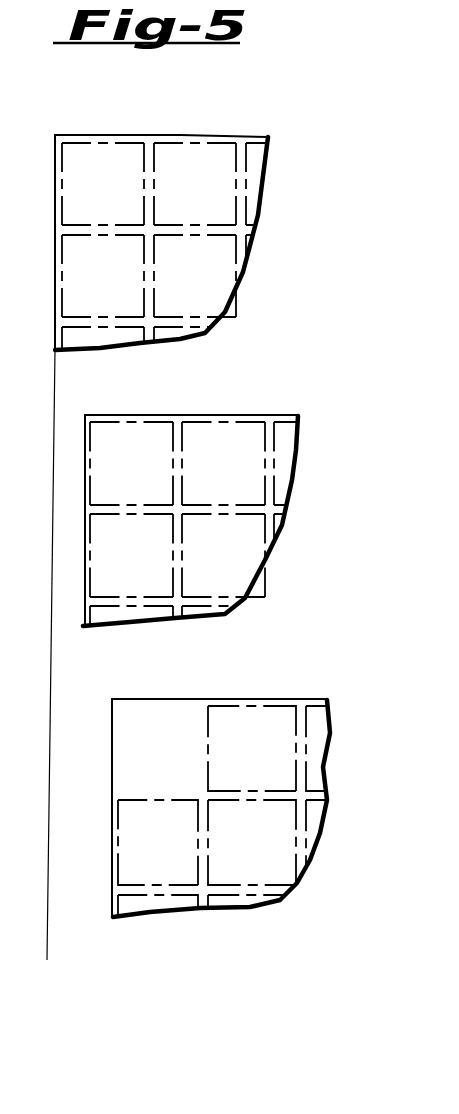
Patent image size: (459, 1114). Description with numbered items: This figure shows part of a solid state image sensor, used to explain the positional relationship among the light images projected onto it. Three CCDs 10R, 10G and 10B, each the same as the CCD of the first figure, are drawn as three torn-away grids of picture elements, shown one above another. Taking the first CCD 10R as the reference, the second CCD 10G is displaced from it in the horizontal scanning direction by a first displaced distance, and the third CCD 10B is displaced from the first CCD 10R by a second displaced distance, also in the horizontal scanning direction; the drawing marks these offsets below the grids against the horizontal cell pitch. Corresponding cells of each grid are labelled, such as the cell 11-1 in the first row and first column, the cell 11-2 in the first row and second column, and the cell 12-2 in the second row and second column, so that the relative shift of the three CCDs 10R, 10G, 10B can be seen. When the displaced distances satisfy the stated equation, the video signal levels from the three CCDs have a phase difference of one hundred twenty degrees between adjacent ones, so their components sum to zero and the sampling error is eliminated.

The first CCD 10R is at (342, 242).
The second CCD 10G is at (350, 527).
The third CCD 10B is at (392, 827).
The filter cell (row 1, column 1) 11-1 is at (92, 143).
The filter cell (row 1, column 2) 11-2 is at (188, 139).
The filter cell (row 2, column 2) 12-2 is at (238, 256).